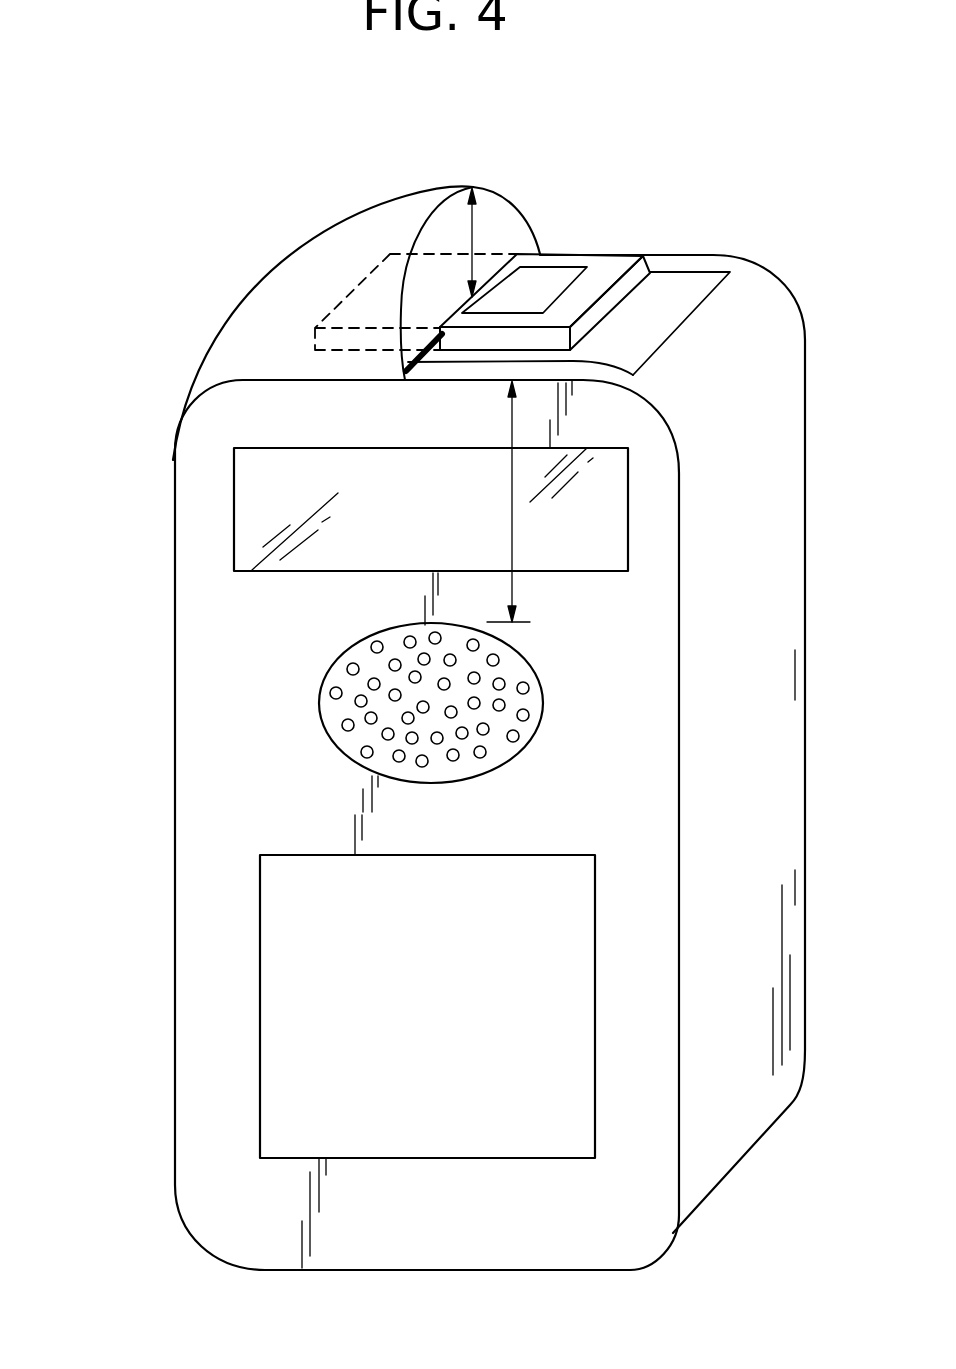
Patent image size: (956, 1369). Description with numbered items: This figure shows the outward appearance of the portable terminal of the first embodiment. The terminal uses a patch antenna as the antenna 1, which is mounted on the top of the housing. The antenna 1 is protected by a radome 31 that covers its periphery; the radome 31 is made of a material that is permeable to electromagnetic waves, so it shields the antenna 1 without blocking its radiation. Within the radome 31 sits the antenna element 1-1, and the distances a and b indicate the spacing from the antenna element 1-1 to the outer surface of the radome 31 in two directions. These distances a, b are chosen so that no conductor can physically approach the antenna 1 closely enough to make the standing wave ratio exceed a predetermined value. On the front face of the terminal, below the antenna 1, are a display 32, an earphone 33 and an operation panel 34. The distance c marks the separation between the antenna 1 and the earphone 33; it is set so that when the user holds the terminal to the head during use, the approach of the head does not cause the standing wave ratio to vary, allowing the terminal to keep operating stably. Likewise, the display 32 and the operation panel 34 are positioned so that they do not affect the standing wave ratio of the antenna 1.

The antenna 1 is at (627, 252).
The antenna element 1-1 is at (550, 283).
The radome 31 is at (378, 202).
The display 32 is at (233, 497).
The earphone 33 is at (318, 700).
The operation panel 34 is at (260, 1006).
The distance a is at (485, 242).
The distance b is at (414, 348).
The distance c is at (508, 501).